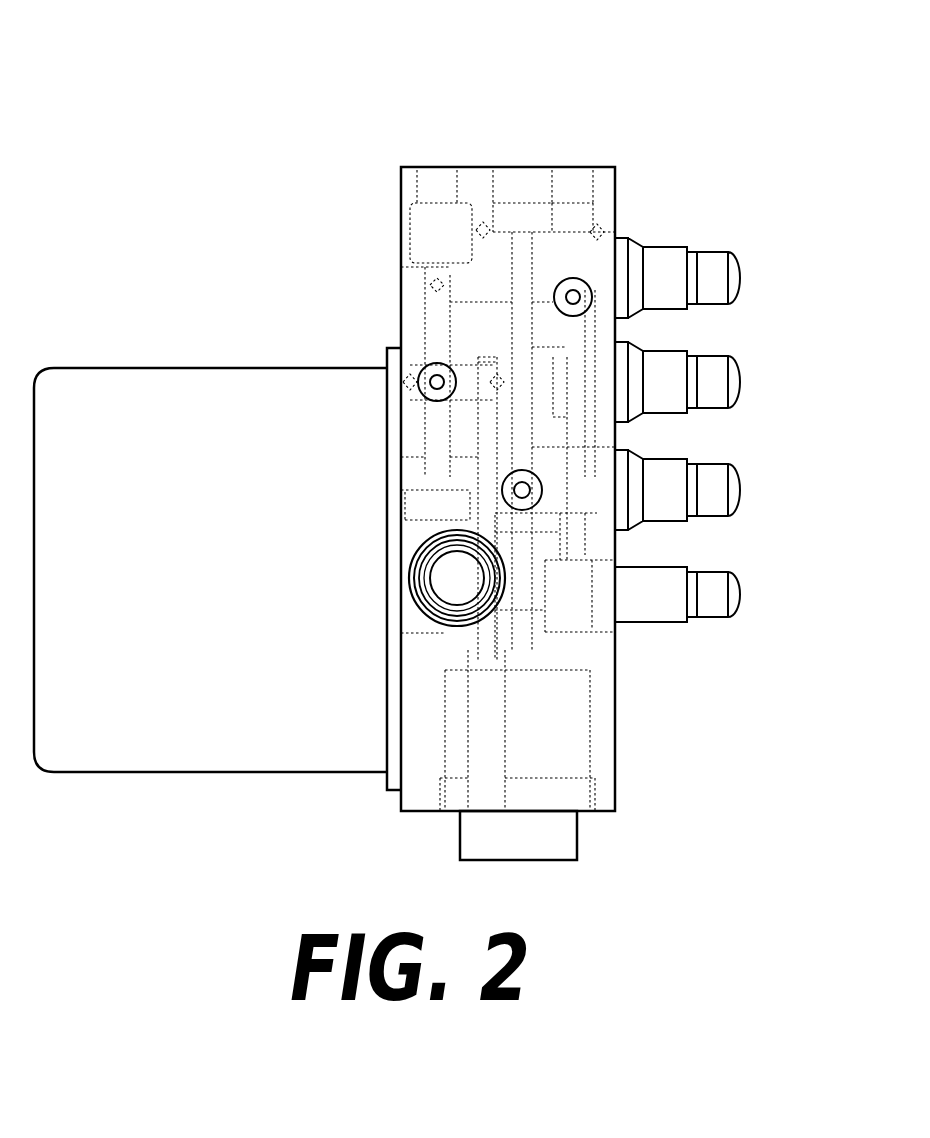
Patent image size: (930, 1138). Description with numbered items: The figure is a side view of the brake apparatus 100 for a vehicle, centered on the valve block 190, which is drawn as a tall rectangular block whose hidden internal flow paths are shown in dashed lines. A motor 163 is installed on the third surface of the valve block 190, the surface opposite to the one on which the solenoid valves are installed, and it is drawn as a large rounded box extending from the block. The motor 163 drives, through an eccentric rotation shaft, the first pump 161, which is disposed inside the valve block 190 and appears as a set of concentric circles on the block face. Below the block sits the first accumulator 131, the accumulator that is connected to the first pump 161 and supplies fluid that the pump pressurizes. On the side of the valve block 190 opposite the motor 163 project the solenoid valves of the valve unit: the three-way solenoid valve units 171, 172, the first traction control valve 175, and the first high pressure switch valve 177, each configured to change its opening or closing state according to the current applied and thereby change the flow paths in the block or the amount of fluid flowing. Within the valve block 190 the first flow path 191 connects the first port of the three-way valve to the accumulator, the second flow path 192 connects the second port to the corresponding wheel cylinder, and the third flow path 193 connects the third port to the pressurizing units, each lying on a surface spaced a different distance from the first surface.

The brake apparatus 100 is at (82, 38).
The first accumulator 131 is at (578, 832).
The first pump 161 is at (448, 596).
The motor 163 is at (150, 377).
The 3-way solenoid valve unit 171 is at (740, 272).
The 3-way solenoid valve unit 172 is at (740, 484).
The first traction control valve 175 is at (740, 380).
The first high pressure switch valve 177 is at (740, 592).
The valve block 190 is at (618, 751).
The first flow path 191 is at (585, 657).
The second flow path 192 is at (528, 172).
The third flow path 193 is at (453, 365).